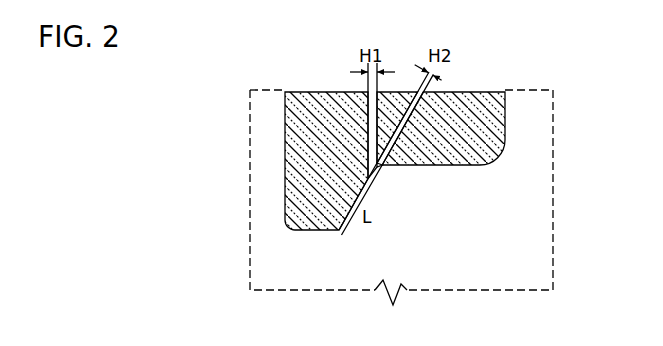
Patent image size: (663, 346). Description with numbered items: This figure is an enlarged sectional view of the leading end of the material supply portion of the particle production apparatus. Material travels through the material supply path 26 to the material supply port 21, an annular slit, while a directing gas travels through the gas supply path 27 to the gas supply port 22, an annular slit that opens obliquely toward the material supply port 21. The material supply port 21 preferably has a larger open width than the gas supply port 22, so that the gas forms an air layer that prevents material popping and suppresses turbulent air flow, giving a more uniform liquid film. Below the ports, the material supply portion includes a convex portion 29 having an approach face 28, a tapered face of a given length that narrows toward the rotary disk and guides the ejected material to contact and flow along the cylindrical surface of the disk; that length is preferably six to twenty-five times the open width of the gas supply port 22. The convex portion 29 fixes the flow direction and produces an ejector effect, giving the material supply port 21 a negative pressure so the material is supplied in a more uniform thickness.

The material supply port 21 is at (379, 180).
The gas supply port 22 is at (386, 168).
The material supply path 26 is at (373, 118).
The gas supply path 27 is at (419, 108).
The approach face 28 is at (345, 233).
The convex portion 29 is at (314, 205).